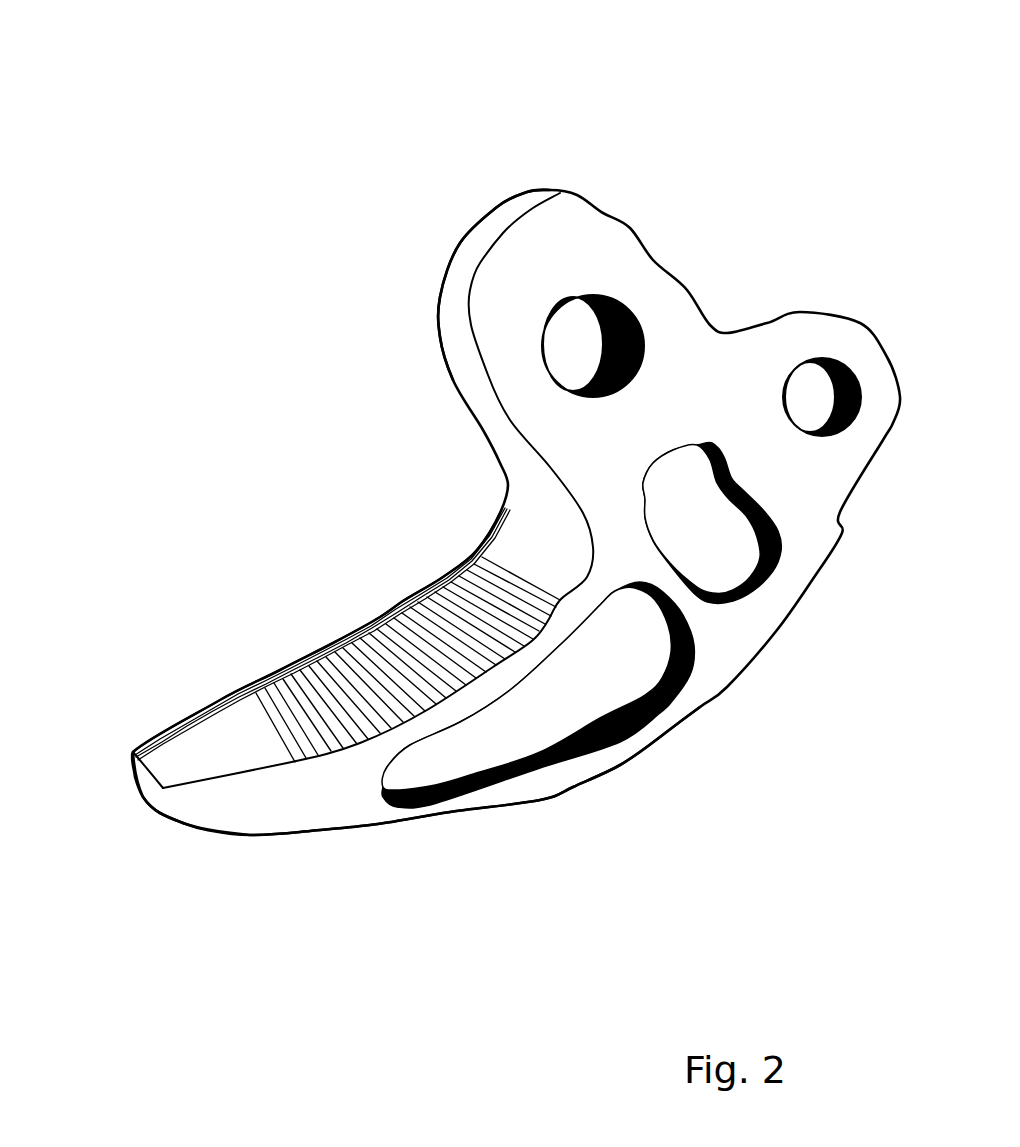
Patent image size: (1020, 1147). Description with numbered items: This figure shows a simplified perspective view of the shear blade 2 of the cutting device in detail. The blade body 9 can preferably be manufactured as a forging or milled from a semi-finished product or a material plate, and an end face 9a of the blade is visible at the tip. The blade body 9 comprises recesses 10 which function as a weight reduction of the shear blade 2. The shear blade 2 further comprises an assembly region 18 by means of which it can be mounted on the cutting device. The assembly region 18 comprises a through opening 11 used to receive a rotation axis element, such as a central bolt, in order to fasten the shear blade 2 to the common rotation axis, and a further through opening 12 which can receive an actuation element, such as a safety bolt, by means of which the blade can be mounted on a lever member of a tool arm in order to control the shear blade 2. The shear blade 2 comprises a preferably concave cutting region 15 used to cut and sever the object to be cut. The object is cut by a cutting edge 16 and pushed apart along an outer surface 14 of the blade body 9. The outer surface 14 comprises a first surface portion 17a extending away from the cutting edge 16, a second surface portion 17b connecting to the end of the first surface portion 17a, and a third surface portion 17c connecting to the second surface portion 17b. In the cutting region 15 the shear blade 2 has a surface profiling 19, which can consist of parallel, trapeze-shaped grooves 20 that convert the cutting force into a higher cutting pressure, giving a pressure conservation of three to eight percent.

The shear blade 2 is at (436, 48).
The blade body 9 is at (313, 803).
The end face of slider 9a is at (132, 757).
The recesses 10 is at (622, 695).
The through opening 11 is at (592, 327).
The through opening 12 is at (823, 387).
The outer surface 14 is at (243, 727).
The cutting region 15 is at (388, 373).
The cutting edge 16 is at (340, 642).
The first surface portion 17a is at (467, 553).
The second surface portion 17b is at (422, 588).
The third surface portion 17c is at (307, 697).
The assembly region 18 is at (470, 211).
The surface profiling 19 is at (514, 653).
The grooves 20 is at (235, 706).